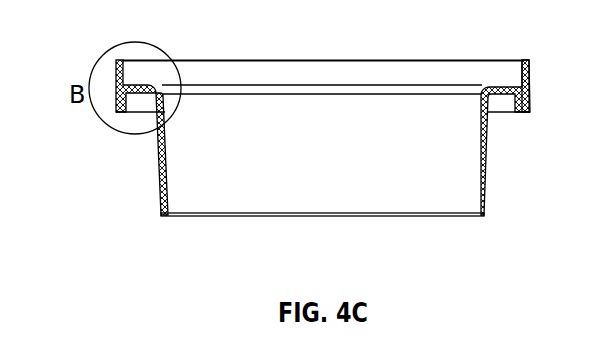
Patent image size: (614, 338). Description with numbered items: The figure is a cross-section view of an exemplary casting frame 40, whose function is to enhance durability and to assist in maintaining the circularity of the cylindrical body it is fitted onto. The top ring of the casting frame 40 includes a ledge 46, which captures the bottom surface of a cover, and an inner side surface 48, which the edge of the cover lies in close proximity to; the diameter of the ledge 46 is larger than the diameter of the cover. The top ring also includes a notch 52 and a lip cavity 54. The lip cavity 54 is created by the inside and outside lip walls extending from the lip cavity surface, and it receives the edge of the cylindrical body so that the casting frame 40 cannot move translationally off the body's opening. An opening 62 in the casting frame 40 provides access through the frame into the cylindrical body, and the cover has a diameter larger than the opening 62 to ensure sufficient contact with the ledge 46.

The casting frame 40 is at (328, 148).
The ledge 46 is at (363, 113).
The inner side surface 48 is at (127, 71).
The notch 52 is at (532, 82).
The lip cavity 54 is at (499, 119).
The opening 62 is at (221, 218).